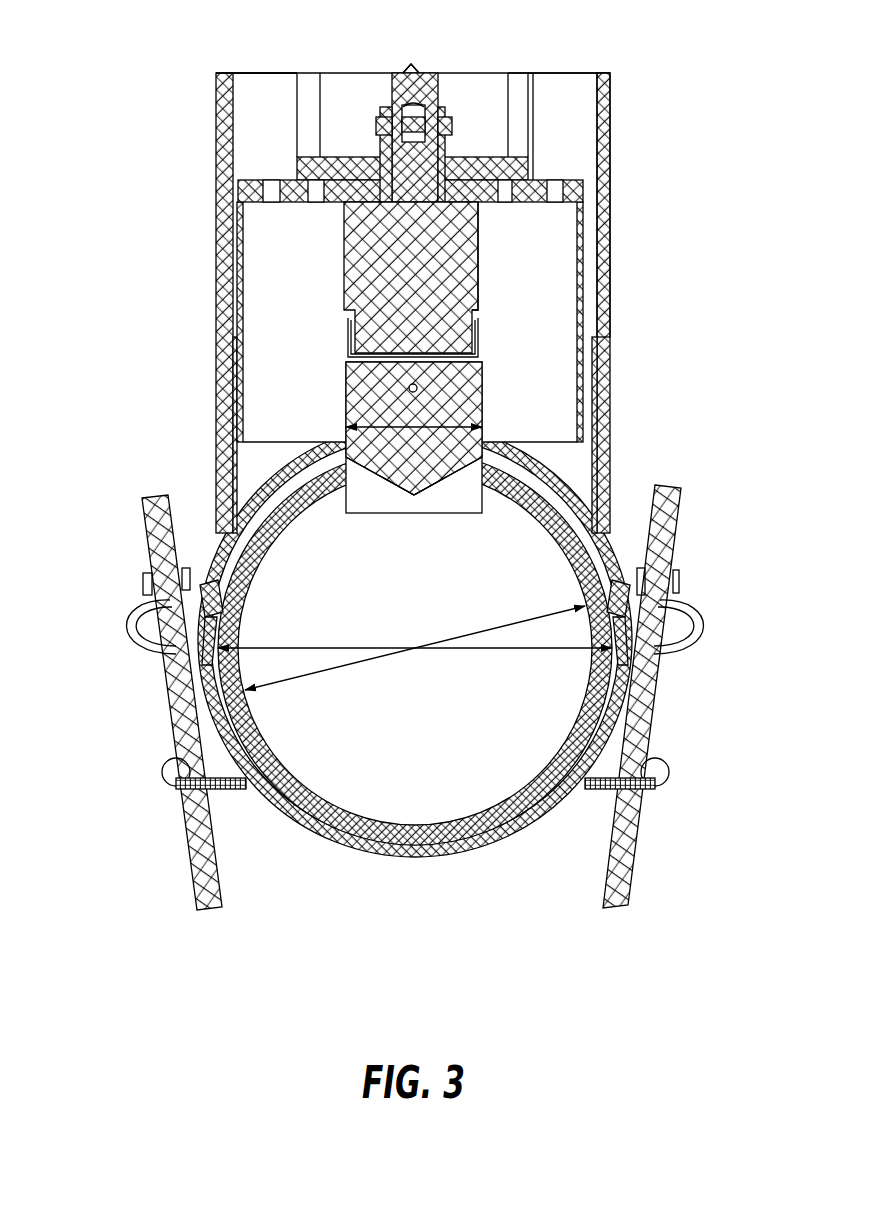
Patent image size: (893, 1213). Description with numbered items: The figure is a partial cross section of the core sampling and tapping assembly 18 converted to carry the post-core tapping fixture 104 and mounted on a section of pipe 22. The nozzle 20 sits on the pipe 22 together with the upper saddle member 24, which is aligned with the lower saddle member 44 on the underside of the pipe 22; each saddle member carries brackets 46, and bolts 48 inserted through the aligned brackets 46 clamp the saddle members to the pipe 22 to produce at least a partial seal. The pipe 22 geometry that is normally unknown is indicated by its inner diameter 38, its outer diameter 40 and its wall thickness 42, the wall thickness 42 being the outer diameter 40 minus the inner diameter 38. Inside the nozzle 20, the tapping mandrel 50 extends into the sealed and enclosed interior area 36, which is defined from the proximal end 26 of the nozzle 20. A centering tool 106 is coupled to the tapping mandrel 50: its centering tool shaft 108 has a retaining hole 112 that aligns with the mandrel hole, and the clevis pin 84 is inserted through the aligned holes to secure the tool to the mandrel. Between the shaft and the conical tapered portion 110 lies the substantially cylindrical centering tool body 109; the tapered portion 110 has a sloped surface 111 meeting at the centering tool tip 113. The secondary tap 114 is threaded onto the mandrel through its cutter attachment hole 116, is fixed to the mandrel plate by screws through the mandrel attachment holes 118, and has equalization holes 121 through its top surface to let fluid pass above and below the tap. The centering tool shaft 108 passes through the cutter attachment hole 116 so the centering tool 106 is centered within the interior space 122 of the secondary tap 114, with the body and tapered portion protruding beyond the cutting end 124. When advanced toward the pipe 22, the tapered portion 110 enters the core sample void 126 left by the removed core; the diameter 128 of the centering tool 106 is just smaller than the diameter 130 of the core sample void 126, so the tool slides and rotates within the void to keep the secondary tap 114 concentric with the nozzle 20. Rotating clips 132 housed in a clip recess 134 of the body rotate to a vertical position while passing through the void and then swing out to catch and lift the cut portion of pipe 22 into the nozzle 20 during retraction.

The core sampling and tapping assembly 18 is at (185, 80).
The post-core tapping fixture 104 is at (185, 80).
The nozzle 20 is at (612, 92).
The pipe 22 is at (424, 748).
The upper saddle member 24 is at (615, 558).
The proximal end 26 is at (220, 476).
The sealed and enclosed interior area 36 is at (554, 81).
The inner diameter 38 is at (455, 638).
The outer diameter 40 is at (500, 651).
The wall thickness 42 is at (560, 748).
The lower saddle member 44 is at (540, 830).
The brackets 46 is at (705, 625).
The bolts 48 is at (680, 530).
The tapping mandrel 50 is at (410, 66).
The clevis pin 84 is at (452, 125).
The centering tool 106 is at (348, 283).
The centering tool shaft 108 is at (413, 142).
The centering tool body 109 is at (478, 265).
The tapered portion 110 is at (402, 484).
The sloped surface 111 is at (430, 487).
The retaining hole 112 is at (420, 100).
The centering tool tip 113 is at (414, 497).
The secondary tap 114 is at (598, 255).
The cutter attachment hole 116 is at (436, 204).
The mandrel attachment holes 118 is at (318, 202).
The equalization holes 121 is at (270, 192).
The interior space 122 is at (302, 401).
The cutting end 124 is at (600, 447).
The core sample void 126 is at (467, 475).
The diameter of the centering tool 128 is at (440, 412).
The diameter of the core sample void 130 is at (395, 503).
The rotating clips 132 is at (349, 338).
The clip recess 134 is at (474, 322).